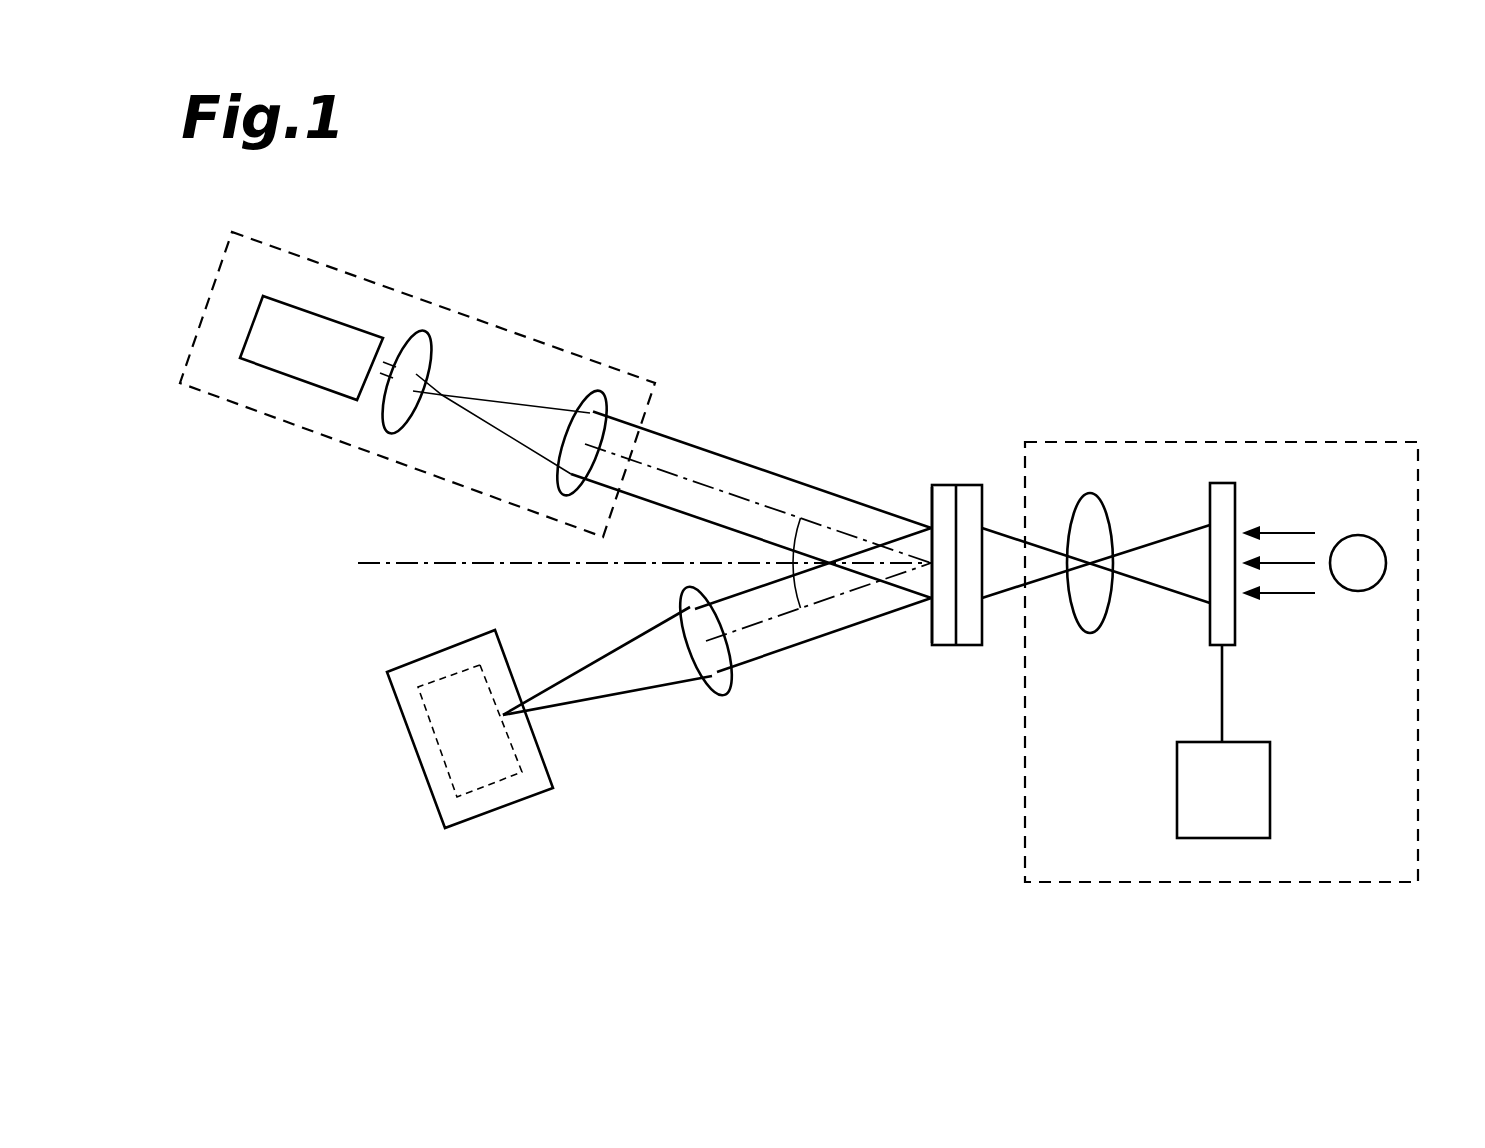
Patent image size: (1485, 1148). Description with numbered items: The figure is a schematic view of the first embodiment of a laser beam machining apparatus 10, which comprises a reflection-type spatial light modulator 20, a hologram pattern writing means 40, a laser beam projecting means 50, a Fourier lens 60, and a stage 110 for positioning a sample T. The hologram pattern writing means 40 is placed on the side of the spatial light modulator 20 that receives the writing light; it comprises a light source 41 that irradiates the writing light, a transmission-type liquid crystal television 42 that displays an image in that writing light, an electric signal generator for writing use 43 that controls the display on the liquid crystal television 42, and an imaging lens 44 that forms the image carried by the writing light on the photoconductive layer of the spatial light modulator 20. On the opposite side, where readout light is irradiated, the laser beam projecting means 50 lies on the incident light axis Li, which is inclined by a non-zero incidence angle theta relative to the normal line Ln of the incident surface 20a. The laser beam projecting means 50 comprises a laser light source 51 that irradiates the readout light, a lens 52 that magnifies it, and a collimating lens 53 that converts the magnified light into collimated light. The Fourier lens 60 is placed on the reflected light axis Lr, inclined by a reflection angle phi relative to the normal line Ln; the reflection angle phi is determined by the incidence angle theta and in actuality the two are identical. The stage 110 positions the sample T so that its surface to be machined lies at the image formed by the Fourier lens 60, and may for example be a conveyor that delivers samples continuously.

The laser beam machining apparatus 10 is at (903, 350).
The reflection-type spatial light modulator 20 is at (948, 645).
The incident surface 20a is at (930, 505).
The hologram pattern writing means 40 is at (1025, 833).
The light source 41 is at (1386, 563).
The transmission-type liquid crystal television 42 is at (1235, 628).
The electric signal generator for writing use 43 is at (1210, 840).
The imaging lens 44 is at (1090, 633).
The laser beam projecting means 50 is at (533, 337).
The laser light source 51 is at (270, 370).
The lens 52 is at (383, 420).
The collimating lens 53 is at (553, 480).
The Fourier lens 60 is at (710, 687).
The stage 110 is at (510, 803).
The sample T is at (428, 767).
The incident light axis Li is at (707, 452).
The reflected light axis Lr is at (807, 640).
The normal line Ln is at (380, 567).
The incidence angle theta is at (781, 535).
The reflection angle phi is at (781, 593).